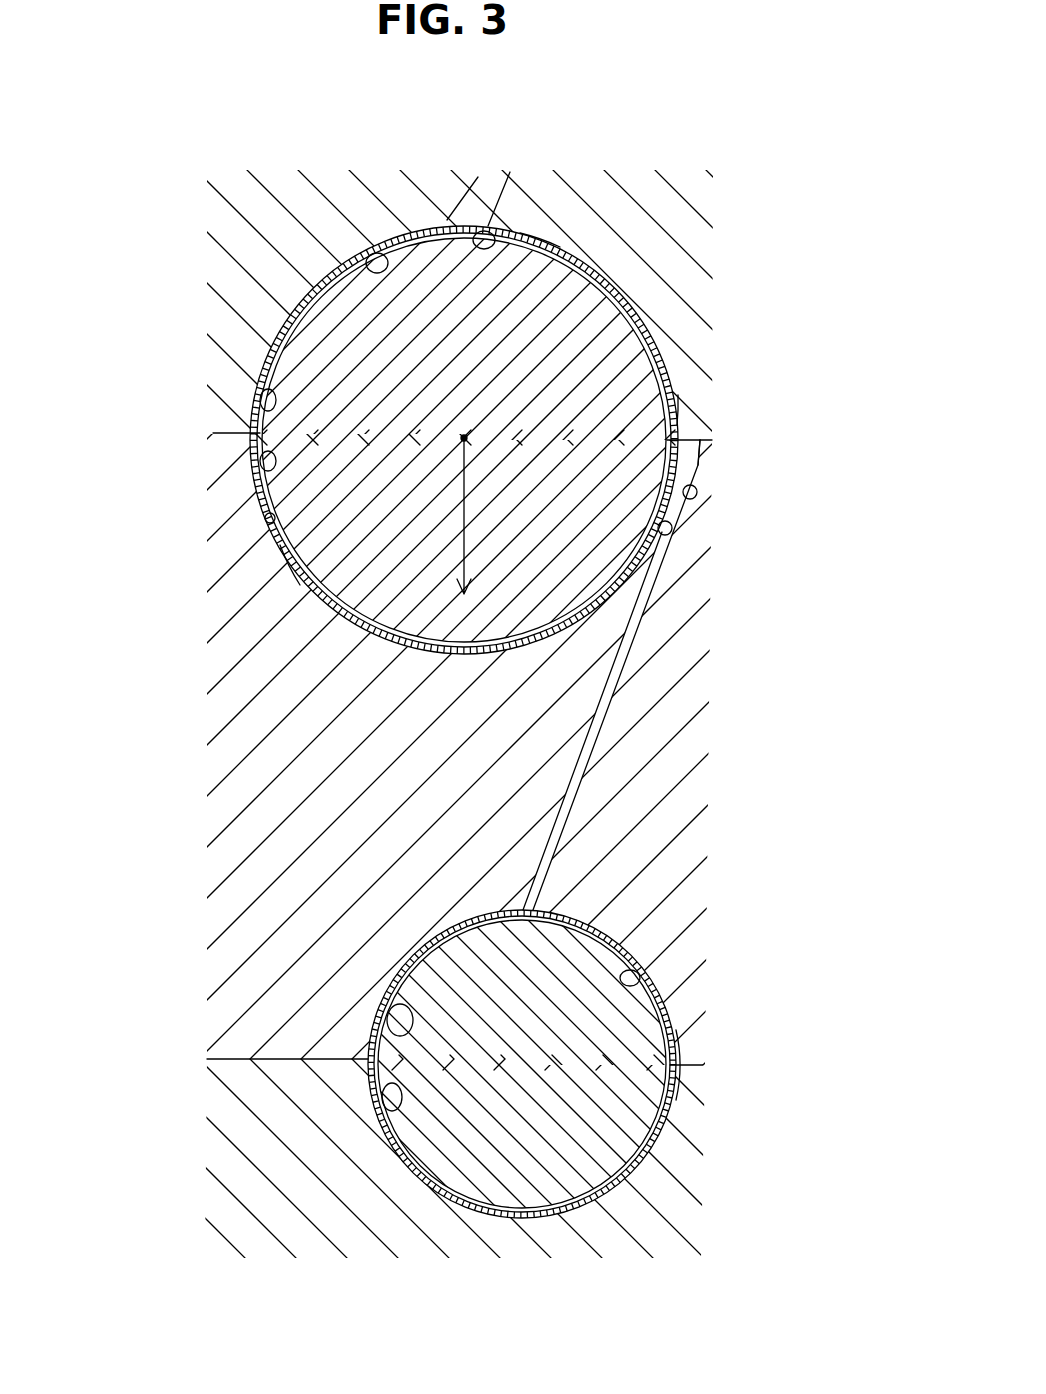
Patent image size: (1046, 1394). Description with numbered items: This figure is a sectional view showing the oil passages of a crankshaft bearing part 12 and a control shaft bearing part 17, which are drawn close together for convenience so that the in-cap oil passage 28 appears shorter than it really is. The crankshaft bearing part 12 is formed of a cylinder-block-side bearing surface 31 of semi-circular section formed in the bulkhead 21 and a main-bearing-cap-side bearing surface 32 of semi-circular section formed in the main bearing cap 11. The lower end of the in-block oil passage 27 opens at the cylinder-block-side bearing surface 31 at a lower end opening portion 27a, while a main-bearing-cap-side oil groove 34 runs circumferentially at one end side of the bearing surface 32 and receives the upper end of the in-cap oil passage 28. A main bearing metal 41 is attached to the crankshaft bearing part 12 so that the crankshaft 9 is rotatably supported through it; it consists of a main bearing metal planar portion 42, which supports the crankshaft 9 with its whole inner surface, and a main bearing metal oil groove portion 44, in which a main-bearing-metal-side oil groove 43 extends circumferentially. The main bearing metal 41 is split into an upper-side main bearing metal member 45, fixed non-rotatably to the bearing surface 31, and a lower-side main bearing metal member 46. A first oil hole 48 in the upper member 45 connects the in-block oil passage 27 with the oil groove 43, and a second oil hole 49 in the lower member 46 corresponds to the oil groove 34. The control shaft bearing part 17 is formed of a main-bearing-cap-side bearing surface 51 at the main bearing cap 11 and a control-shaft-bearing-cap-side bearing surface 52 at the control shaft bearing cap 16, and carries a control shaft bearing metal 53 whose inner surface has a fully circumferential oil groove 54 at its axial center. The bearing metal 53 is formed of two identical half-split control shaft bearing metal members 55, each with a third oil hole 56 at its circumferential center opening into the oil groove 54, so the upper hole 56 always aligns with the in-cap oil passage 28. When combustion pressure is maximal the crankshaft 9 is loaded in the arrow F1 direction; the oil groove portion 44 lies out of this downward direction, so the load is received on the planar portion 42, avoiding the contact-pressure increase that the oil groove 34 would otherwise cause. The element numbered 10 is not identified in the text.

The crankshaft 9 is at (602, 313).
The engine 10 is at (272, 259).
The main bearing cap 11 is at (676, 650).
The crankshaft bearing part 12 is at (194, 430).
The control shaft bearing cap 16 is at (665, 1160).
The control shaft bearing part 17 is at (245, 1055).
The bulkhead 21 is at (490, 305).
The in-block oil passage 27 is at (487, 183).
The lower end opening portion 27a is at (472, 217).
The in-cap oil passage 28 is at (612, 690).
The cylinder-block-side bearing surface 31 is at (250, 418).
The main-bearing-cap-side bearing surface 32 is at (252, 456).
The main-bearing-cap-side oil groove 34 is at (703, 508).
The main bearing metal 41 is at (744, 437).
The main bearing metal planar portion 42 is at (290, 558).
The main-bearing-metal-side oil groove 43 is at (350, 258).
The main bearing metal oil groove portion 44 is at (598, 268).
The upper-side main bearing metal member 45 is at (678, 409).
The lower-side main bearing metal member 46 is at (739, 461).
The first oil hole 48 is at (538, 235).
The second oil hole 49 is at (267, 515).
The main-bearing-cap-side bearing surface 51 is at (373, 1040).
The control-shaft-bearing-cap-side bearing surface 52 is at (376, 1110).
The control shaft bearing metal 53 is at (747, 1065).
The oil groove 54 is at (632, 980).
The control shaft bearing metal member 55 is at (678, 1040).
The third oil hole 56 is at (527, 897).
The load direction F1 is at (462, 531).